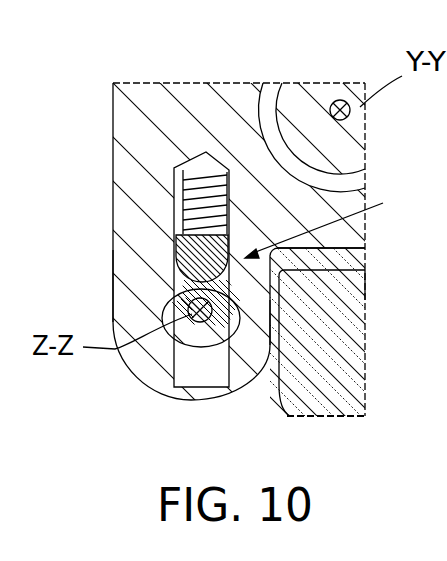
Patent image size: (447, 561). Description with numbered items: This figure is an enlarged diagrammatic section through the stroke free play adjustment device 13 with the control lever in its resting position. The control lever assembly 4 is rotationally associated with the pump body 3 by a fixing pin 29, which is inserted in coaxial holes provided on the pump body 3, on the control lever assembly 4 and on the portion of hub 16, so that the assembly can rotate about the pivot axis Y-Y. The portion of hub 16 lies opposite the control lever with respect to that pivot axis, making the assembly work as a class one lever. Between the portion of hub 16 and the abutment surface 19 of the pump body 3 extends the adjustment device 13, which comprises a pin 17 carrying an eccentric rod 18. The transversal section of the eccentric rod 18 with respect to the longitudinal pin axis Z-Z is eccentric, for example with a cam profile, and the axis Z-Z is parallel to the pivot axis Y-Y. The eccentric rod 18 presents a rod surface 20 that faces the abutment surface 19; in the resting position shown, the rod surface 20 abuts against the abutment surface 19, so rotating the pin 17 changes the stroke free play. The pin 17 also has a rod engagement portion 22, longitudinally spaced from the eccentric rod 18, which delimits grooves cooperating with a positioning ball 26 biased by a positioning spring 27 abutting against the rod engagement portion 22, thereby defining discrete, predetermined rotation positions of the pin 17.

The pump body 3 is at (320, 354).
The control lever assembly 4 is at (188, 103).
The stroke free play adjustment device 13 is at (383, 203).
The portion of hub 16 is at (113, 295).
The pin 17 is at (198, 345).
The eccentric rod 18 is at (350, 248).
The abutment surface 19 is at (273, 352).
The rod surface 20 is at (355, 304).
The rod engagement portion 22 is at (175, 336).
The positioning ball 26 is at (173, 250).
The positioning spring 27 is at (185, 181).
The fixing pin 29 is at (307, 105).